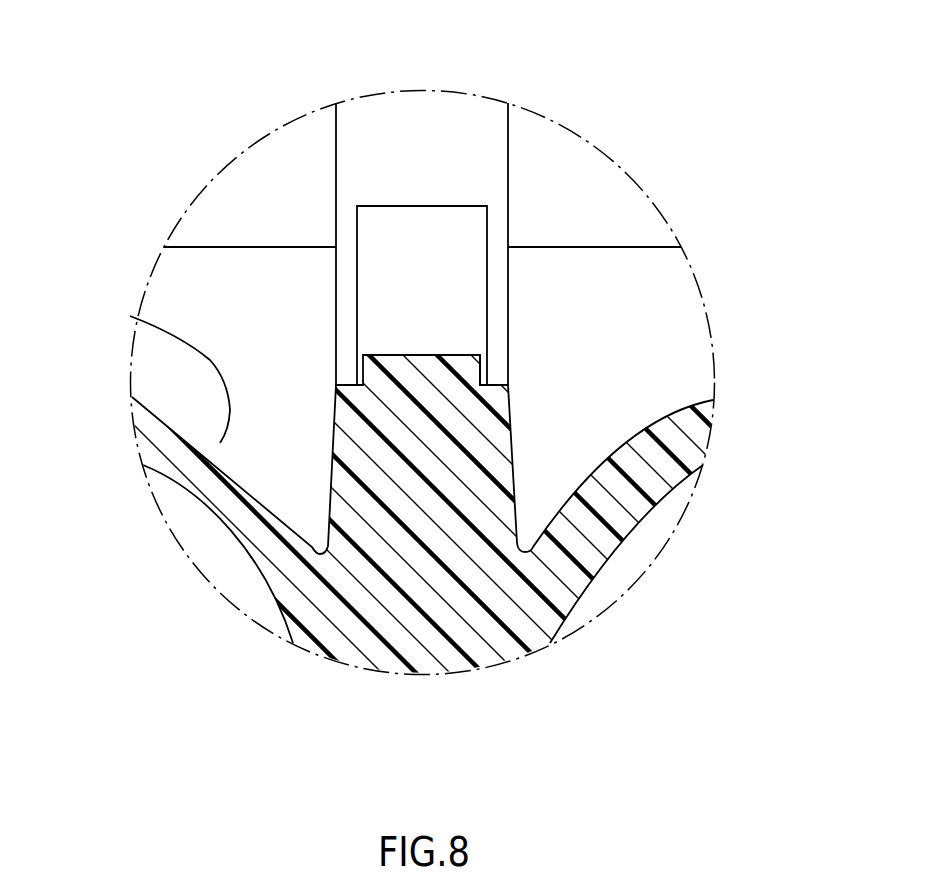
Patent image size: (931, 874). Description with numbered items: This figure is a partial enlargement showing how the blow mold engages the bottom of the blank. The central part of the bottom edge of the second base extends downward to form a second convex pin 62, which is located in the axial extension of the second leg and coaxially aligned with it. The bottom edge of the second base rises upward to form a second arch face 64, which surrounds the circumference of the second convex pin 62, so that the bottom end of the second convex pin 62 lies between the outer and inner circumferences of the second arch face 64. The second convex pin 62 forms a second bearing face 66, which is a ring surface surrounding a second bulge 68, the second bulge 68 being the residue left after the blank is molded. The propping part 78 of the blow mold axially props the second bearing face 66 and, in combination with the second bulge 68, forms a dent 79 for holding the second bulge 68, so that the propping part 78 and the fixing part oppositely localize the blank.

The second convex pin 62 is at (513, 450).
The second arch face 64 is at (130, 316).
The second bearing face 66 is at (497, 383).
The second bulge 68 is at (405, 355).
The propping part 78 is at (508, 172).
The dent 79 is at (485, 295).